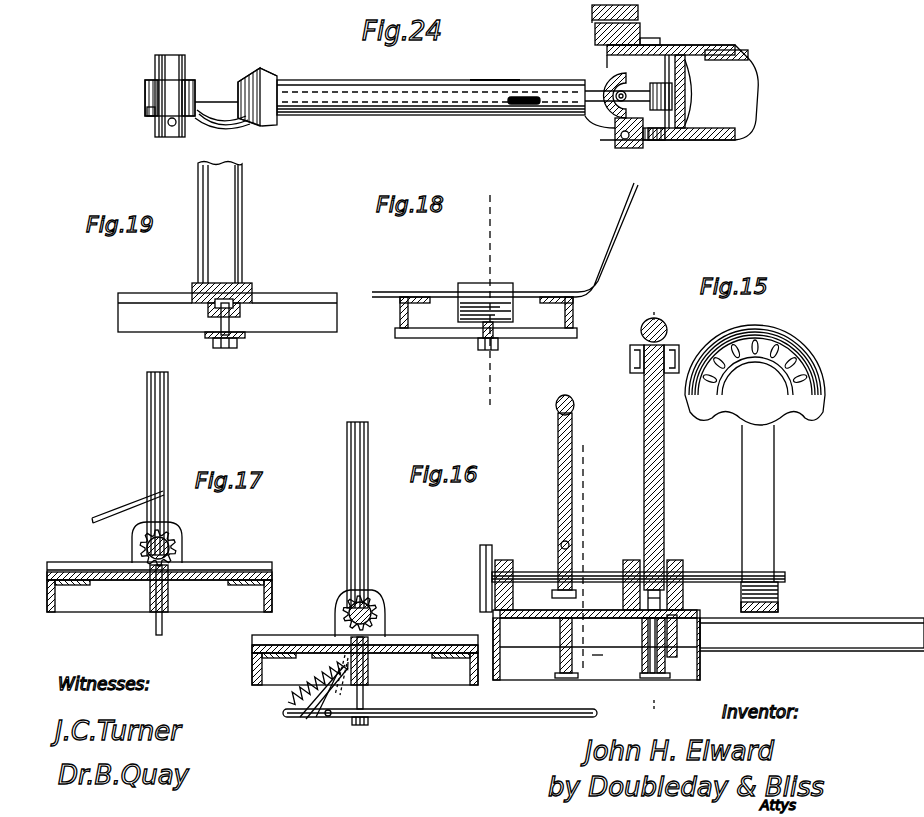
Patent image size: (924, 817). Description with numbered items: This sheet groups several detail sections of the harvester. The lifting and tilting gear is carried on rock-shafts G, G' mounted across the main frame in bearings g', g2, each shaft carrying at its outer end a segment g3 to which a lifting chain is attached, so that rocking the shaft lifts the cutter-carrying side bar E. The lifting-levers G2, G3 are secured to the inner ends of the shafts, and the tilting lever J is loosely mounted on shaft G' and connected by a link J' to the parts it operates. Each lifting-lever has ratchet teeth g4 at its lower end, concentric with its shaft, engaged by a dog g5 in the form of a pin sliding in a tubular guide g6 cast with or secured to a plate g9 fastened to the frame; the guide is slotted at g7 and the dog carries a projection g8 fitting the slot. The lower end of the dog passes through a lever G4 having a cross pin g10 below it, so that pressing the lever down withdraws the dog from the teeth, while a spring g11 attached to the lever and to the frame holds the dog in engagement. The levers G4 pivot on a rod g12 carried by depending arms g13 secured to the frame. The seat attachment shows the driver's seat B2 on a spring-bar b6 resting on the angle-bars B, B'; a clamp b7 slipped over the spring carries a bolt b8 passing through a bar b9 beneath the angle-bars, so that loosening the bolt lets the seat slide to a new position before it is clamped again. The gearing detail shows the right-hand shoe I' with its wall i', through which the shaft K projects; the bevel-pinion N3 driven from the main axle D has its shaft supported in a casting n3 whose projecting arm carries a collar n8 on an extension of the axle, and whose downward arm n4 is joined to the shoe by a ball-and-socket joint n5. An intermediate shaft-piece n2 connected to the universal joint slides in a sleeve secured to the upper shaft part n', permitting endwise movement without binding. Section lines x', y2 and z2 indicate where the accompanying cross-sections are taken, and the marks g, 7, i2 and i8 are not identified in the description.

In FIG. 24, the main axle D is at (172, 68).
In FIG. 24, the collar n8 is at (150, 112).
In FIG. 24, the intermediate shaft-piece n2 is at (222, 125).
In FIG. 24, the bevel-pinion N3 is at (268, 80).
In FIG. 24, the upper part of pinion shaft n' is at (431, 86).
In FIG. 24, the sleeve or casting n3 is at (472, 84).
In FIG. 24, the downward-extending arm n4 is at (597, 132).
In FIG. 24, the ball-and-socket joint n5 is at (620, 146).
In FIG. 24, the shaft K is at (604, 76).
In FIG. 24, the side bar E is at (638, 14).
In FIG. 24, the wall of the shoe i' is at (654, 30).
In FIG. 24, the shoe I' is at (690, 92).
In FIG. 24, the knurled nut i2 is at (680, 95).
In FIG. 24, the flange i8 is at (648, 100).
In FIG. 19, the spring-bar b6 is at (220, 223).
In FIG. 18, the spring-bar b6 is at (622, 212).
In FIG. 16, the spring-bar b6 is at (759, 518).
In FIG. 19, the clamp b7 is at (194, 290).
In FIG. 18, the clamp b7 is at (494, 298).
In FIG. 19, the angle-bar B is at (227, 299).
In FIG. 18, the angle-bar B is at (494, 314).
In FIG. 17, the angle-bar B is at (159, 587).
In FIG. 16, the angle-bar B is at (588, 651).
In FIG. 18, the angle-bar B' is at (398, 312).
In FIG. 17, the angle-bar B' is at (266, 594).
In FIG. 16, the angle-bar B' is at (266, 668).
In FIG. 15, the driver's seat B2 is at (755, 375).
In FIG. 19, the bolt b8 is at (210, 338).
In FIG. 18, the bolt b8 is at (486, 326).
In FIG. 19, the bar b9 is at (240, 343).
In FIG. 18, the bar b9 is at (502, 346).
In FIG. 18, the block 7 is at (485, 291).
In FIG. 18, the section line z2 is at (489, 300).
In FIG. 16, the section line x' is at (654, 508).
In FIG. 16, the section line y2 is at (583, 567).
In FIG. 17, the tilting lever J is at (169, 463).
In FIG. 16, the tilting lever J is at (555, 496).
In FIG. 17, the link J' is at (128, 494).
In FIG. 16, the link J' is at (545, 521).
In FIG. 17, the housing g is at (110, 549).
In FIG. 16, the bearing g' is at (690, 546).
In FIG. 17, the bearing g2 is at (138, 536).
In FIG. 16, the bearing g2 is at (386, 620).
In FIG. 16, the segment g3 is at (480, 552).
In FIG. 17, the teeth g4 is at (91, 532).
In FIG. 16, the teeth g4 is at (340, 620).
In FIG. 17, the dog g5 is at (162, 630).
In FIG. 16, the dog g5 is at (364, 700).
In FIG. 16, the guide g6 is at (400, 656).
In FIG. 17, the slot g7 is at (168, 604).
In FIG. 16, the slot g7 is at (320, 712).
In FIG. 17, the pin or projection g8 is at (150, 594).
In FIG. 17, the plate g9 is at (208, 597).
In FIG. 16, the plate g9 is at (414, 656).
In FIG. 16, the cross pin g10 is at (362, 724).
In FIG. 16, the spring g11 is at (322, 674).
In FIG. 16, the rod g12 is at (334, 712).
In FIG. 16, the depending arms g13 is at (338, 700).
In FIG. 16, the rock-shaft G is at (638, 561).
In FIG. 17, the rock-shaft G' is at (179, 541).
In FIG. 16, the rock-shaft G' is at (509, 584).
In FIG. 16, the lifting-lever G2 is at (664, 474).
In FIG. 16, the lifting-lever G3 is at (360, 520).
In FIG. 16, the lever G4 is at (530, 738).